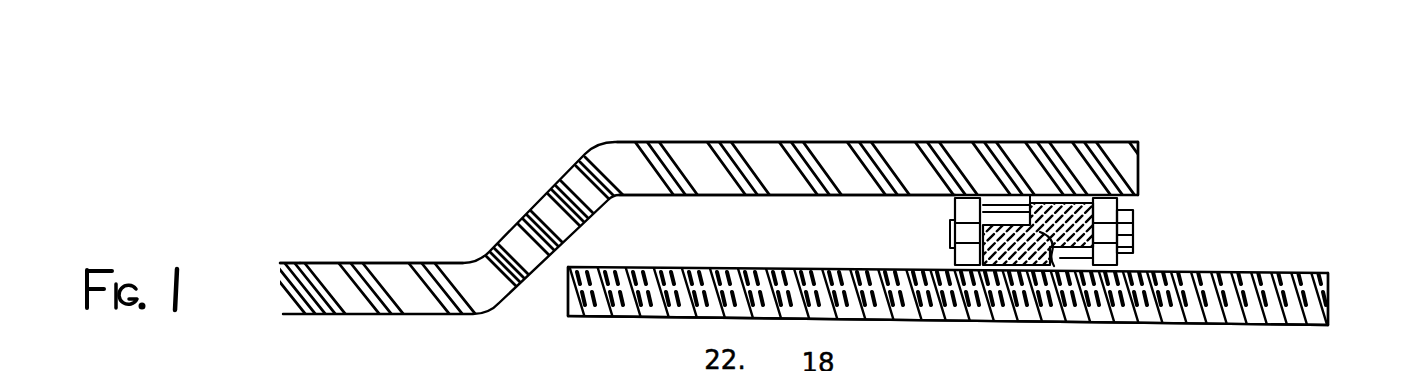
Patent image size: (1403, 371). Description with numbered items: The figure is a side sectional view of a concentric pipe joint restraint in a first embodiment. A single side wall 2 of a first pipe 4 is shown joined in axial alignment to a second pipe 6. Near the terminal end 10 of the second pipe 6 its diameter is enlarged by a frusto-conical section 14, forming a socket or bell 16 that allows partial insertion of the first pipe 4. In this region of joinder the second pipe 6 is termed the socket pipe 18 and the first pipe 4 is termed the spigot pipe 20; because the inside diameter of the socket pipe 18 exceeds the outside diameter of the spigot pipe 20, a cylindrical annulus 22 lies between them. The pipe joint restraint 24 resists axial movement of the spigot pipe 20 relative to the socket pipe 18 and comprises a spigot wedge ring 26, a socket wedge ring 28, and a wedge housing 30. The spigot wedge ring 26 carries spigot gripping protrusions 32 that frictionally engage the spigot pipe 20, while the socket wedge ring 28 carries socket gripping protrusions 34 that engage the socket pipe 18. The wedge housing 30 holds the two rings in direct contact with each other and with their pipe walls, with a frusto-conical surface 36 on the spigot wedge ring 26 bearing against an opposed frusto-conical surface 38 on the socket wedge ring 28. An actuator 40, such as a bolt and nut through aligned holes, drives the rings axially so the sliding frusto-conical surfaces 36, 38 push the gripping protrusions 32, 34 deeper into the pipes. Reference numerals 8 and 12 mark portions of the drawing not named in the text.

The side wall 2 is at (1247, 282).
The first pipe 4 is at (1317, 333).
The second pipe 6 is at (307, 328).
The first flange portion 8 is at (327, 280).
The terminal end 10 is at (1142, 173).
The end of base plate 12 is at (567, 291).
The frusto-conical section 14 is at (547, 220).
The socket or bell 16 is at (685, 130).
The socket pipe 18 is at (855, 163).
The spigot pipe 20 is at (860, 295).
The annulus 22 is at (713, 223).
The pipe joint restraint 24 is at (1185, 230).
The spigot wedge ring 26 is at (1004, 200).
The socket wedge ring 28 is at (1141, 152).
The wedge housing 30 is at (962, 192).
The spigot gripping protrusions 32 is at (1077, 303).
The socket gripping protrusions 34 is at (1085, 140).
The frusto-conical surface 36 is at (1038, 163).
The opposed frusto-conical surface 38 is at (1057, 264).
The actuator 40 is at (1137, 220).